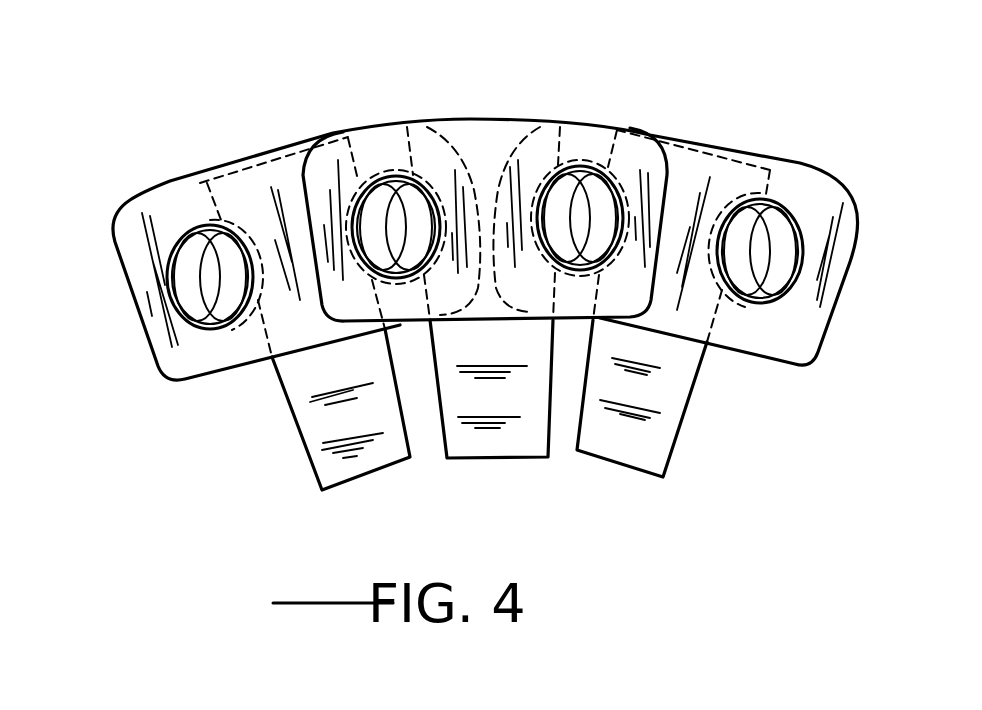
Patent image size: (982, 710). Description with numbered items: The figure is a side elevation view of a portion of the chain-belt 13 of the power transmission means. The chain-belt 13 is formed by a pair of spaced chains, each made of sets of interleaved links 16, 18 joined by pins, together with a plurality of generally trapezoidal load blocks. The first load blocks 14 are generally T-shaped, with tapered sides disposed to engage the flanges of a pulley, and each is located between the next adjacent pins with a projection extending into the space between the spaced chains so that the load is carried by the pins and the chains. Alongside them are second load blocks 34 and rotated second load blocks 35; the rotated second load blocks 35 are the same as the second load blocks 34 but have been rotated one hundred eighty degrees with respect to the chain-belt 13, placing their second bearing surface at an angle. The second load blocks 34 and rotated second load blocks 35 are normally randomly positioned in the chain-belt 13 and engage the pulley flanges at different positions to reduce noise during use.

The chain-belt 13 is at (465, 82).
The first load block 14 is at (497, 445).
The interleaved links 16 is at (512, 128).
The interleaved links 18 is at (723, 143).
The second load block 34 is at (662, 433).
The rotated second load block 35 is at (328, 422).